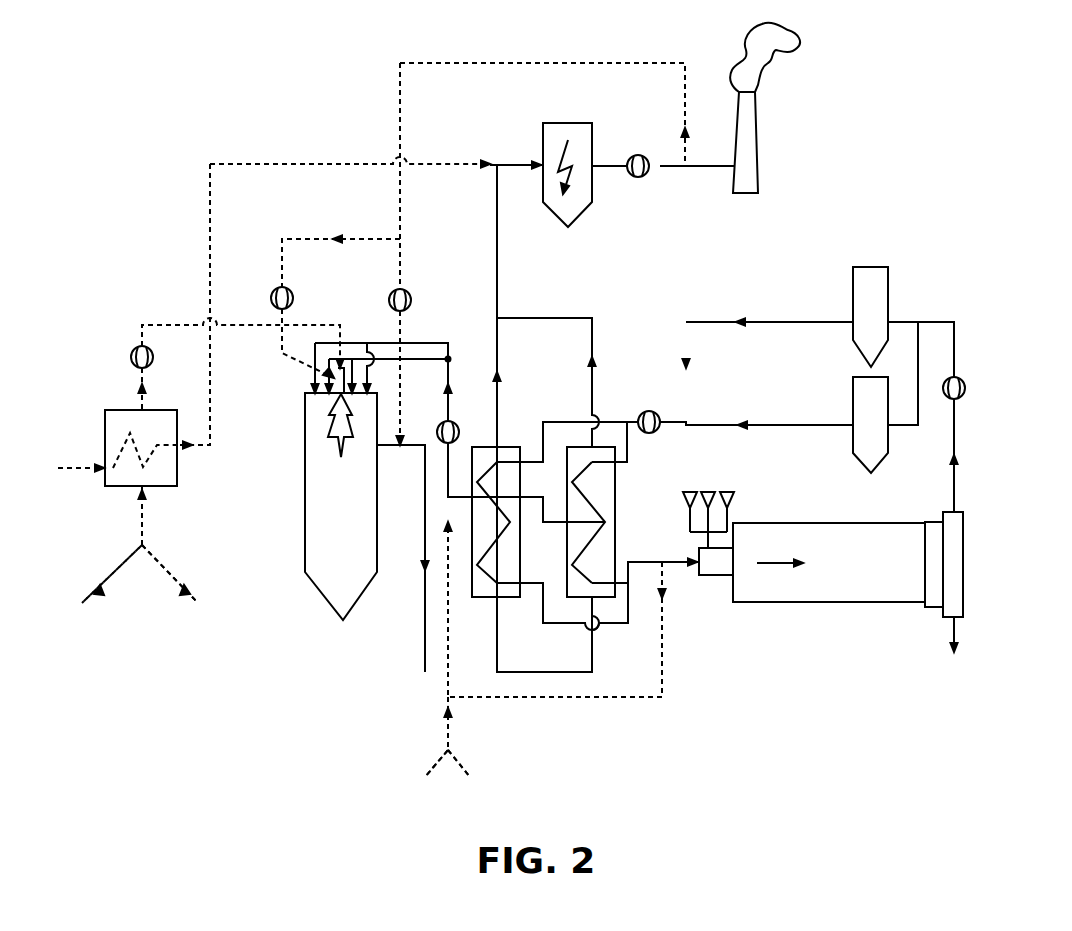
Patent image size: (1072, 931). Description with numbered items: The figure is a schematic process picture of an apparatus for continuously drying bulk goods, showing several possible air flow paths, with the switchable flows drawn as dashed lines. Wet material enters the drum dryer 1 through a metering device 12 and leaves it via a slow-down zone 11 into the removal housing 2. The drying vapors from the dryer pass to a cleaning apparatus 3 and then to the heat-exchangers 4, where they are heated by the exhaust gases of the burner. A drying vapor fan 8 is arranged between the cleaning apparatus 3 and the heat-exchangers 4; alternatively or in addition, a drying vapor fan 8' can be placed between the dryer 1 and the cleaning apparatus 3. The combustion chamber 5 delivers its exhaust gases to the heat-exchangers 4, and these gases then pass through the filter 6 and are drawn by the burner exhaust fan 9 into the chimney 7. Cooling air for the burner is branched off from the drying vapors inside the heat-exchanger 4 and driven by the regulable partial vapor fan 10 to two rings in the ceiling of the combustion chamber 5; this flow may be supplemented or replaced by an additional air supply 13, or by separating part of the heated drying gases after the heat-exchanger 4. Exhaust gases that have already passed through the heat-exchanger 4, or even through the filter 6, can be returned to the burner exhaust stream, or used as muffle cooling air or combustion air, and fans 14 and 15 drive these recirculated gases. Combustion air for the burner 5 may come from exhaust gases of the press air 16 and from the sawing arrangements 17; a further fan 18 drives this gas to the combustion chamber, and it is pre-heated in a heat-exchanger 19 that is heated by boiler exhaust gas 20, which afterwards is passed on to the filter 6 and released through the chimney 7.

The drum dryer 1 is at (820, 523).
The removal housing 2 is at (963, 510).
The cleaning apparatus 3 is at (852, 397).
The heat-exchanger 4 is at (602, 447).
The combustion chamber 5 is at (332, 597).
The filter 6 is at (592, 135).
The chimney 7 is at (758, 147).
The drying vapor fan 8 is at (970, 364).
The drying vapor fan 8' is at (654, 386).
The burner exhaust fan 9 is at (641, 155).
The regulable partial vapor fan 10 is at (452, 420).
The slow-down zone 11 is at (925, 522).
The metering device 12 is at (709, 492).
The additional air supply 13 is at (447, 772).
The fan 14 is at (410, 292).
The fan 15 is at (292, 291).
The press air exhaust gases 16 is at (100, 588).
The sawing arrangement exhaust gas 17 is at (184, 588).
The further fan 18 is at (132, 352).
The heat-exchanger 19 is at (177, 486).
The boiler exhaust gas 20 is at (63, 470).